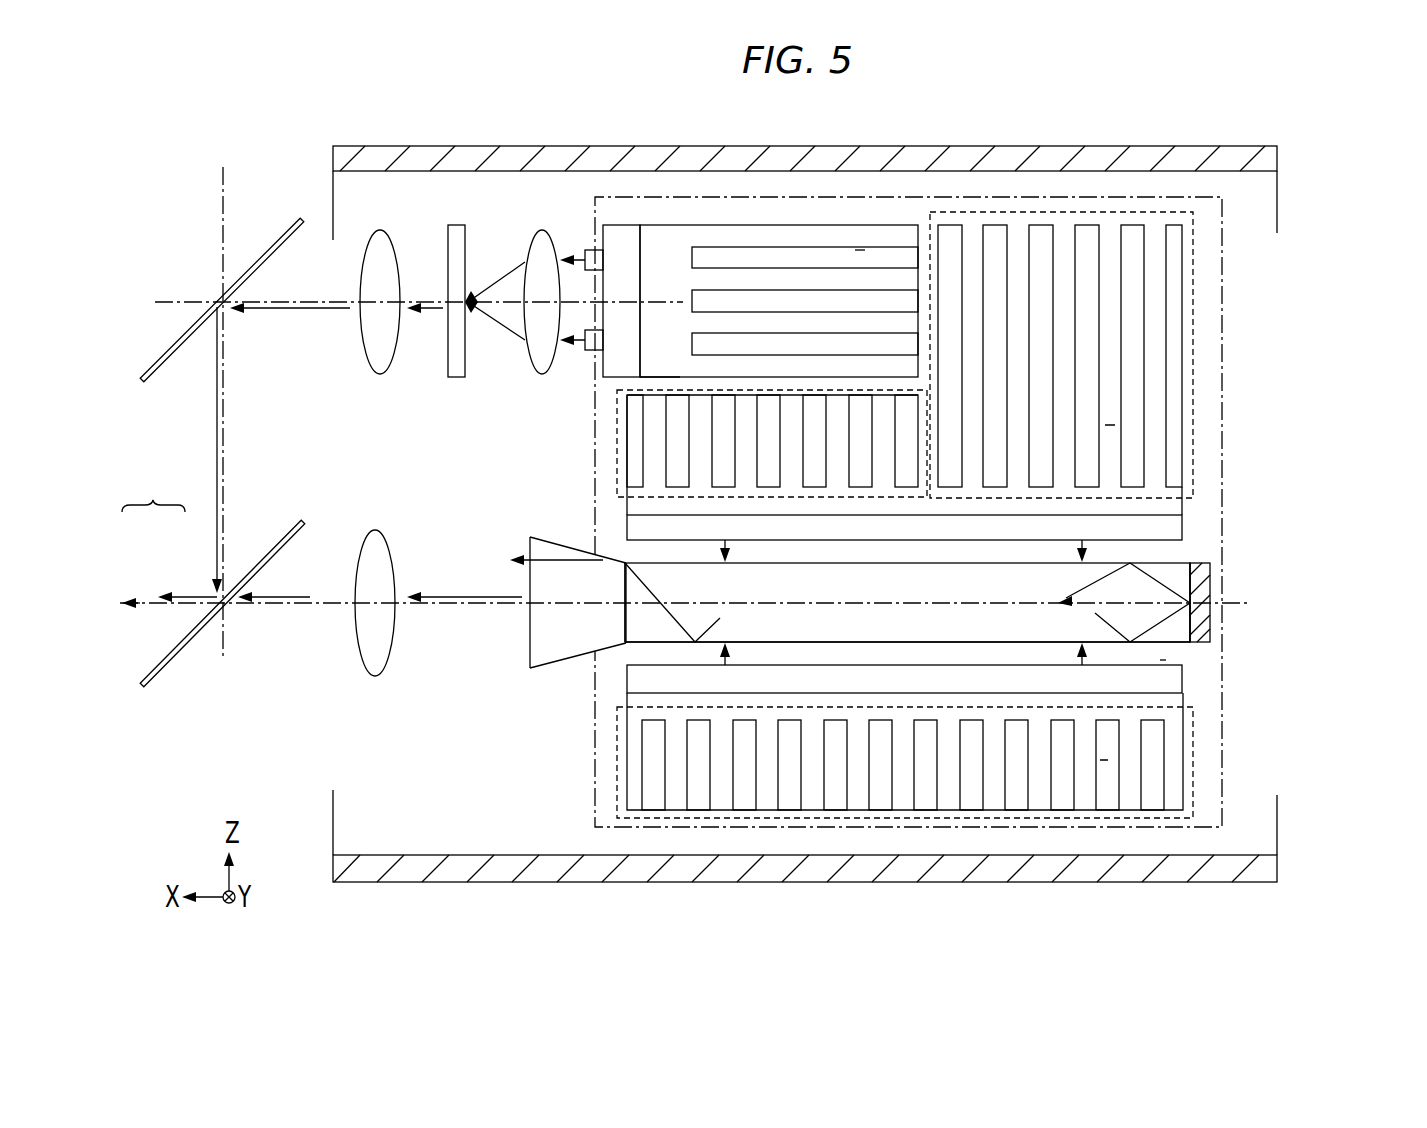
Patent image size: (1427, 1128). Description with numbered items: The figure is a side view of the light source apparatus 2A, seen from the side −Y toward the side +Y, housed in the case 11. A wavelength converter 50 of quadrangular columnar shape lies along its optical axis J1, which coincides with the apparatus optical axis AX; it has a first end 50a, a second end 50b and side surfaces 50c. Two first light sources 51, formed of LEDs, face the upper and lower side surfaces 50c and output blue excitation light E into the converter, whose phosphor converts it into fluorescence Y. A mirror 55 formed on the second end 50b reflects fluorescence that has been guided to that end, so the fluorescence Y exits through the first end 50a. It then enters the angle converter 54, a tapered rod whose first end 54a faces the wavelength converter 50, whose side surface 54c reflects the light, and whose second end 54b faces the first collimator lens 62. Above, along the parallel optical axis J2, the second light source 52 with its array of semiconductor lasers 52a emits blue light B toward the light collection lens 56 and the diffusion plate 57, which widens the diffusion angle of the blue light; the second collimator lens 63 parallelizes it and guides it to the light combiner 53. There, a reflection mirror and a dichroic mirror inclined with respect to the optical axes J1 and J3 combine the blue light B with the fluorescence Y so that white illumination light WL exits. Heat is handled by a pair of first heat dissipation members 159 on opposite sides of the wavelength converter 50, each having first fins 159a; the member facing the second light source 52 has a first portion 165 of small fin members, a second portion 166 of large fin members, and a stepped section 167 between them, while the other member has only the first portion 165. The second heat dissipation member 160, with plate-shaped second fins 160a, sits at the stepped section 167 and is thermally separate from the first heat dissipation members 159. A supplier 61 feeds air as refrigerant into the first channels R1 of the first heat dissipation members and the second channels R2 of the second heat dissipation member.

The case 11 is at (1197, 158).
The light source apparatus 2A is at (1334, 156).
The supplier 61 is at (1222, 273).
The second light source 52 is at (624, 214).
The semiconductor lasers 52a is at (590, 252).
The second heat dissipation member 160 is at (779, 230).
The second fins 160a is at (808, 235).
The second channels R2 is at (865, 255).
The first heat dissipation members 159 is at (889, 597).
The first fins 159a is at (1125, 345).
The first channels R1 is at (1110, 428).
The first portion 165 is at (615, 470).
The second portion 166 is at (1192, 467).
The first light source 51 is at (1175, 523).
The wavelength converter 50 is at (903, 613).
The first end 50a is at (622, 622).
The second end 50b is at (1208, 627).
The side surfaces 50c is at (1147, 642).
The mirror 55 is at (1200, 582).
The excitation light E is at (1160, 662).
The angle converter 54 is at (537, 612).
The first end 54a is at (640, 552).
The second end 54b is at (530, 653).
The side surface 54c is at (552, 670).
The second collimator lens 63 is at (381, 247).
The diffusion plate 57 is at (456, 235).
The light collection lens 56 is at (542, 240).
The first collimator lens 62 is at (378, 540).
The light combiner 53 is at (265, 243).
The stepped section 167 is at (650, 384).
The optical axis J1 is at (1250, 603).
The optical axis J2 is at (192, 300).
The optical axis J3 is at (222, 198).
The blue light B is at (430, 312).
The fluorescence Y is at (438, 597).
The illumination light WL is at (153, 536).